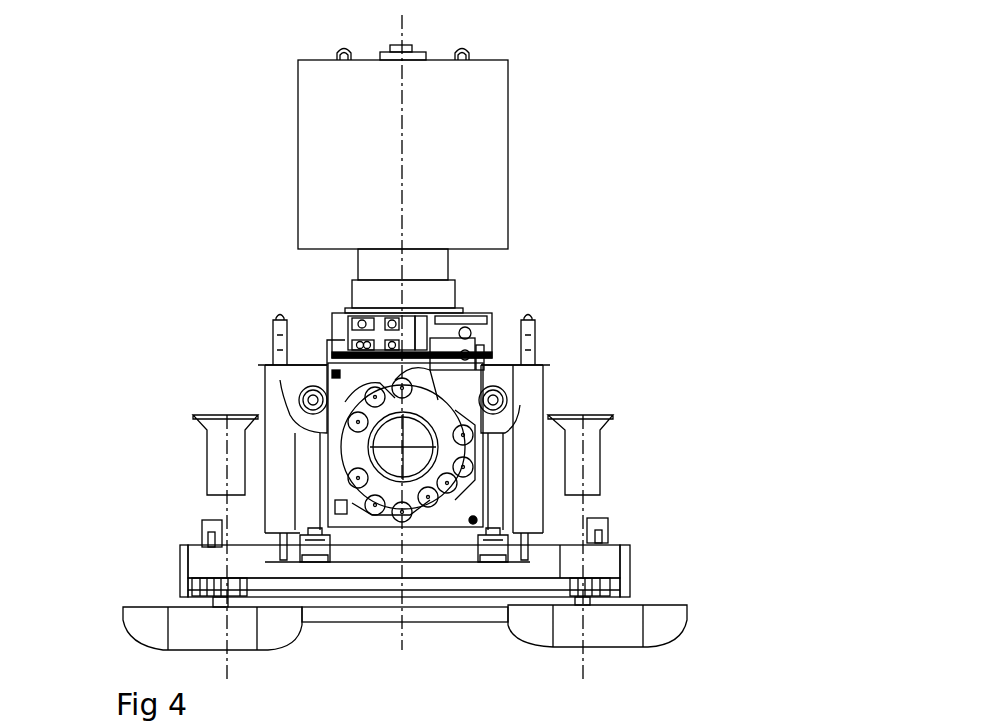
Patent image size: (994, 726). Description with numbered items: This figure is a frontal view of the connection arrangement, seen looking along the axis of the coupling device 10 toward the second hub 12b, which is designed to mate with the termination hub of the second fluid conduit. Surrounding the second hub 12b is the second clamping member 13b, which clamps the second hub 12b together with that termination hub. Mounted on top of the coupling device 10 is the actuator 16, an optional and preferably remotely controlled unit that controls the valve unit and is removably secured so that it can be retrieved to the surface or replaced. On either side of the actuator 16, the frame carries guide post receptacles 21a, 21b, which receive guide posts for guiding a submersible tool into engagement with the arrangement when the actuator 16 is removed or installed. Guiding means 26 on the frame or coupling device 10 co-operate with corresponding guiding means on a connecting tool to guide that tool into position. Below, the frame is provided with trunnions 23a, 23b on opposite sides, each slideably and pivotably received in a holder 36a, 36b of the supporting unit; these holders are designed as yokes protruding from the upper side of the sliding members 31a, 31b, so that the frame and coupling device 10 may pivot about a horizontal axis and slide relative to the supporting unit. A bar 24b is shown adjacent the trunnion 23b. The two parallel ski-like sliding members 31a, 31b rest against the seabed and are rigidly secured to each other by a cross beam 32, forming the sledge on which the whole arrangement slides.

The actuator 16 is at (488, 131).
The coupling device 10 is at (508, 295).
The guiding means 26 is at (300, 396).
The guide post receptacle 21a is at (220, 455).
The guide post receptacle 21b is at (596, 452).
The holder 36a is at (210, 525).
The holder 36b is at (600, 520).
The trunnion 23a is at (185, 565).
The trunnion 23b is at (627, 556).
The right guide rail 24b is at (612, 567).
The sliding member 31a is at (142, 622).
The sliding member 31b is at (667, 620).
The cross beam 32 is at (468, 612).
The second hub 12b is at (395, 465).
The second clamping member 13b is at (420, 495).